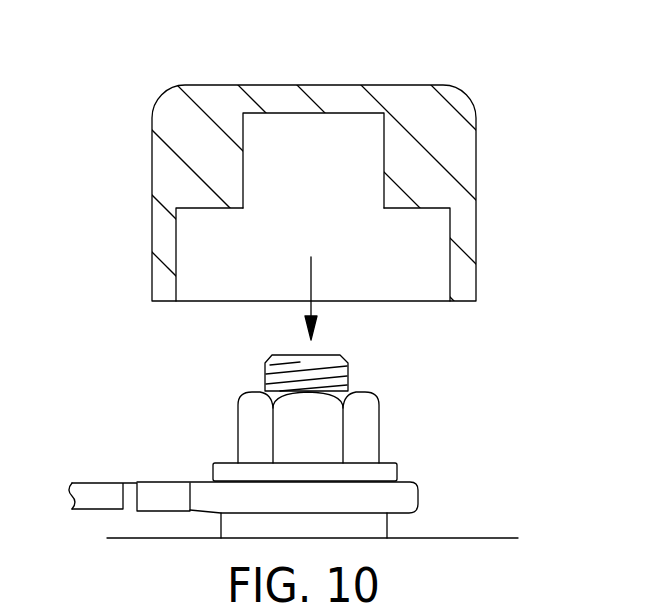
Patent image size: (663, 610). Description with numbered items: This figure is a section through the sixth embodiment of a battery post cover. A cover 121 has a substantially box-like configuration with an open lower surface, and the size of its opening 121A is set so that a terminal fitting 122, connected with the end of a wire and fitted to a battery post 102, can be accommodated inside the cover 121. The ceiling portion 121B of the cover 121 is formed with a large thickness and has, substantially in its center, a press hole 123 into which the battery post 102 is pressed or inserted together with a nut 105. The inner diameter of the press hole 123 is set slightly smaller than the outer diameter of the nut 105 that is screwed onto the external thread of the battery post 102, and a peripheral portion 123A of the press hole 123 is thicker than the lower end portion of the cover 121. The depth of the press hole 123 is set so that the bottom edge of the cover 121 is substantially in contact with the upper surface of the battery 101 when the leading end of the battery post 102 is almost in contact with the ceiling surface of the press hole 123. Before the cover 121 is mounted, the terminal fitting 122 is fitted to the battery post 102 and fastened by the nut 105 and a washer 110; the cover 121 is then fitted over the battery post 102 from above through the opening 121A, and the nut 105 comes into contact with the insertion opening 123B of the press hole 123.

The cover 121 is at (472, 66).
The opening 121A is at (453, 288).
The ceiling portion 121B is at (222, 210).
The press hole 123 is at (347, 149).
The peripheral portion 123A is at (203, 162).
The insertion opening 123B is at (383, 192).
The battery post 102 is at (348, 368).
The nut 105 is at (366, 432).
The washer 110 is at (226, 470).
The terminal fitting 122 is at (410, 497).
The battery 101 is at (470, 538).